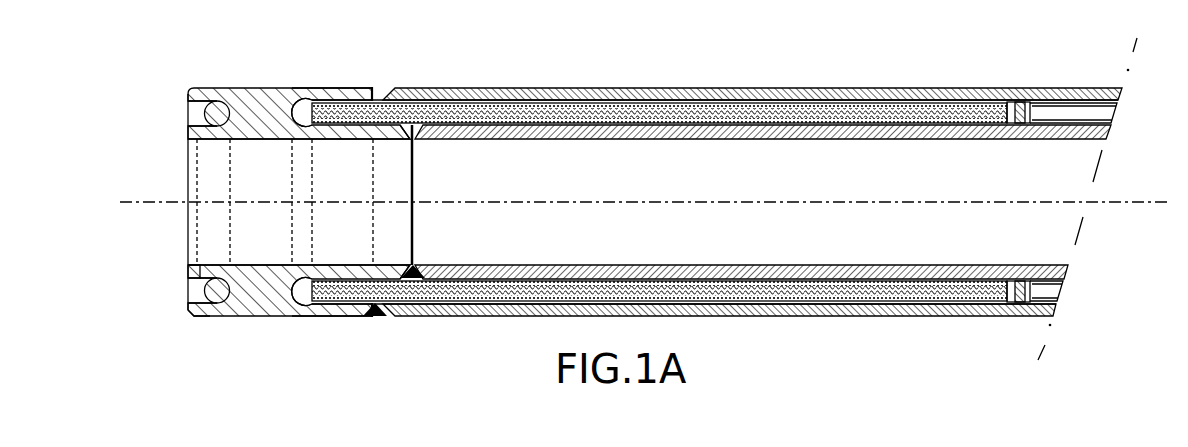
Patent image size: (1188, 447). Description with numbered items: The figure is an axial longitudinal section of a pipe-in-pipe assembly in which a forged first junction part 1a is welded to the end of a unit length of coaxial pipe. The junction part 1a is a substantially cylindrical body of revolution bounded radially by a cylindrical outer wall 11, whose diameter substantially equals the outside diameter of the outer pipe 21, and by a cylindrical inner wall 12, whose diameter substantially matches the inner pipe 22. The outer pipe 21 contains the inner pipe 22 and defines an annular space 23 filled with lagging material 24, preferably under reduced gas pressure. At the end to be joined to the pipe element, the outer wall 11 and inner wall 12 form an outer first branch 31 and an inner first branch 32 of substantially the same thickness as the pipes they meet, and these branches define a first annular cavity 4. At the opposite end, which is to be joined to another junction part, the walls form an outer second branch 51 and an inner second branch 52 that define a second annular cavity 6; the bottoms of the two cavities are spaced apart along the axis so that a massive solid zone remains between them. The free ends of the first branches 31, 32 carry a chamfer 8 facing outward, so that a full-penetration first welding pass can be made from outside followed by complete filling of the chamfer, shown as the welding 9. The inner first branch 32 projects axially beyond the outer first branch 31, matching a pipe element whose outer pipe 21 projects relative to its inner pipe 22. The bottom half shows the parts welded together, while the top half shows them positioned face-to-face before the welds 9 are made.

The first junction part 1a is at (170, 75).
The cylindrical outer wall 11 is at (248, 88).
The cylindrical inner wall 12 is at (262, 140).
The second annular cavity 6 is at (207, 117).
The first annular cavity 4 is at (303, 101).
The outer first branch 31 is at (341, 93).
The inner first branch 32 is at (354, 141).
The chamfer 8 is at (372, 98).
The outer pipe 21 is at (726, 93).
The inner pipe 22 is at (795, 140).
The annular space 23 is at (859, 102).
The lagging material 24 is at (795, 112).
The welding 9 is at (418, 266).
The outer second branch 51 is at (203, 318).
The inner second branch 52 is at (200, 264).